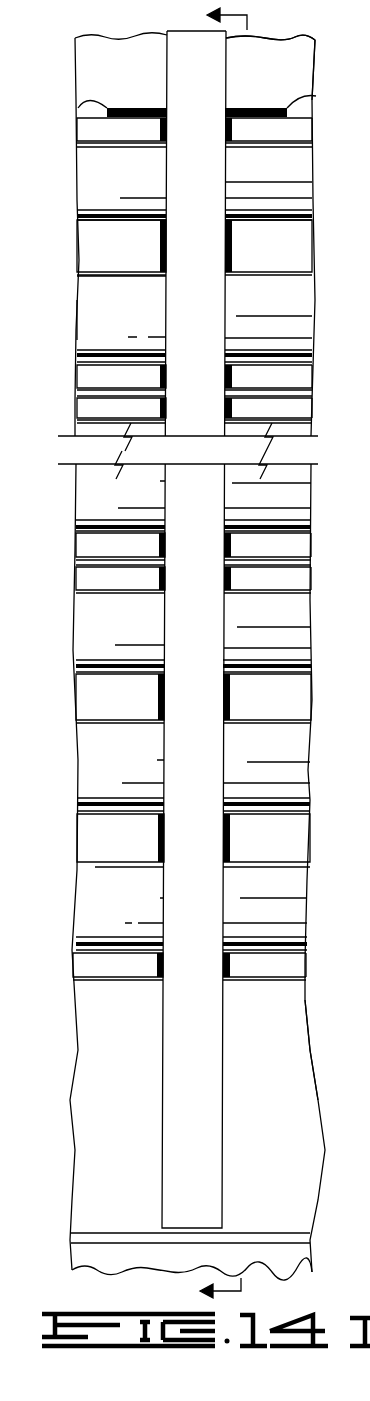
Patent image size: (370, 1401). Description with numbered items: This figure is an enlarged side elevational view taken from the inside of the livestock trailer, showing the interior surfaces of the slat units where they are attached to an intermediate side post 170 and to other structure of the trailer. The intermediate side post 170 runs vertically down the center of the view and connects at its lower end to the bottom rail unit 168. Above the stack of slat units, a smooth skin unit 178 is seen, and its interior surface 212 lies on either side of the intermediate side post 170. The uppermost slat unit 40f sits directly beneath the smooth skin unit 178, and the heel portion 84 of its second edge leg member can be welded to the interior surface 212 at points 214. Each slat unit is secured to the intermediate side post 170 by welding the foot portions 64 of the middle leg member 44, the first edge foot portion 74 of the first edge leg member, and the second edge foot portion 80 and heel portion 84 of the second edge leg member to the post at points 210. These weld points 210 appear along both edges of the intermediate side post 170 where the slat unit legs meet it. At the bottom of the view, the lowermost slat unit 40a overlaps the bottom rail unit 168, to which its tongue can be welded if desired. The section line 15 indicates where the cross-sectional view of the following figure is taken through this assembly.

The section line 15- 15 is at (210, 652).
The intermediate side post 170 is at (214, 89).
The interior surface 212 is at (131, 89).
The smooth skin unit 178 is at (262, 50).
The weld point 214 is at (78, 105).
The heel portion 84 is at (305, 125).
The second edge foot portion 80 is at (305, 139).
The weld point 210 is at (227, 128).
The foot portion 64 is at (85, 232).
The middle leg member 44 is at (131, 258).
The first edge foot portion 74 is at (85, 377).
The uppermost slat unit 40f is at (95, 318).
The lowermost slat unit 40a is at (293, 843).
The bottom rail unit 168 is at (293, 1050).